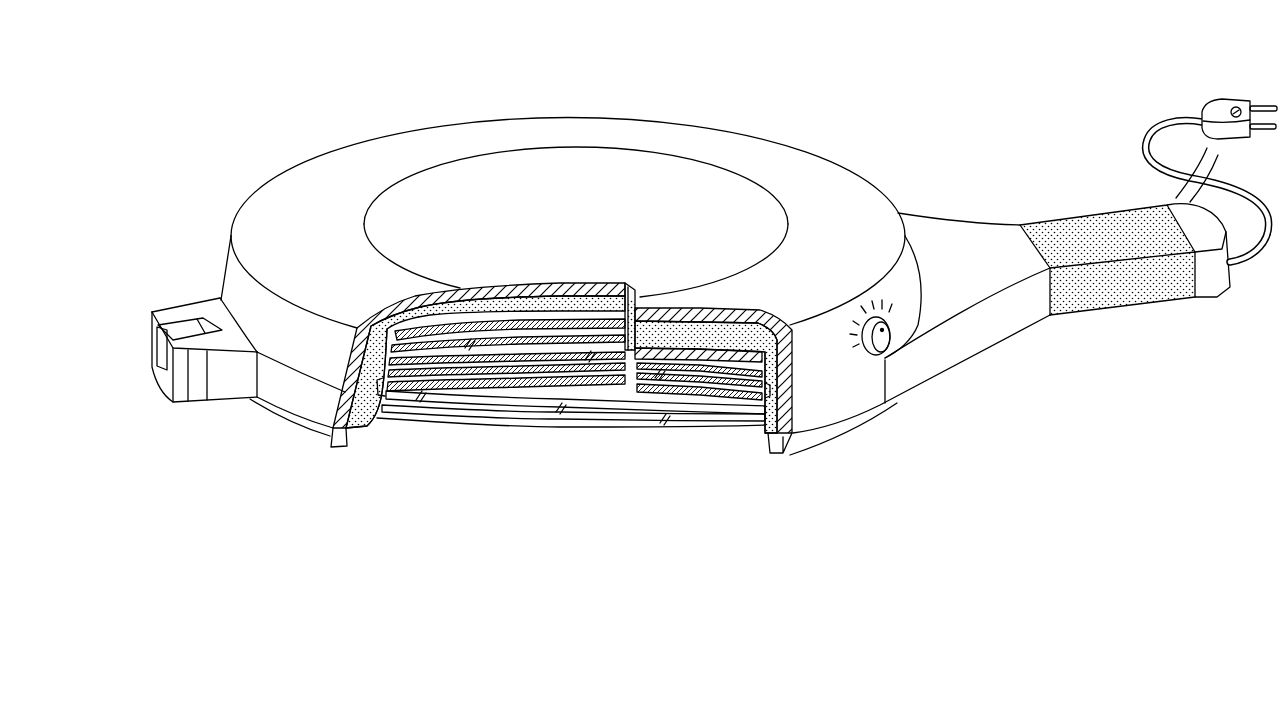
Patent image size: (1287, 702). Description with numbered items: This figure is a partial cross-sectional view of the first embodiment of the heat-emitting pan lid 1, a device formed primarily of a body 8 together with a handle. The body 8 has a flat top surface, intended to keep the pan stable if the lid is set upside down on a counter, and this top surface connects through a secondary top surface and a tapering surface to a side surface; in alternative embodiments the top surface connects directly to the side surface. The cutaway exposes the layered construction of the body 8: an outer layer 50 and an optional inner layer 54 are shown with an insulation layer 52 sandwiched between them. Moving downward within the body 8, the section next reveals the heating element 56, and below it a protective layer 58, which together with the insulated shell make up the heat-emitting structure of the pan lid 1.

The heat-emitting pan lid 1 is at (1045, 44).
The body 8 is at (372, 142).
The outer layer 50 is at (600, 287).
The insulation layer 52 is at (526, 312).
The inner layer 54 is at (492, 321).
The heating element 56 is at (428, 345).
The protective layer 58 is at (523, 422).